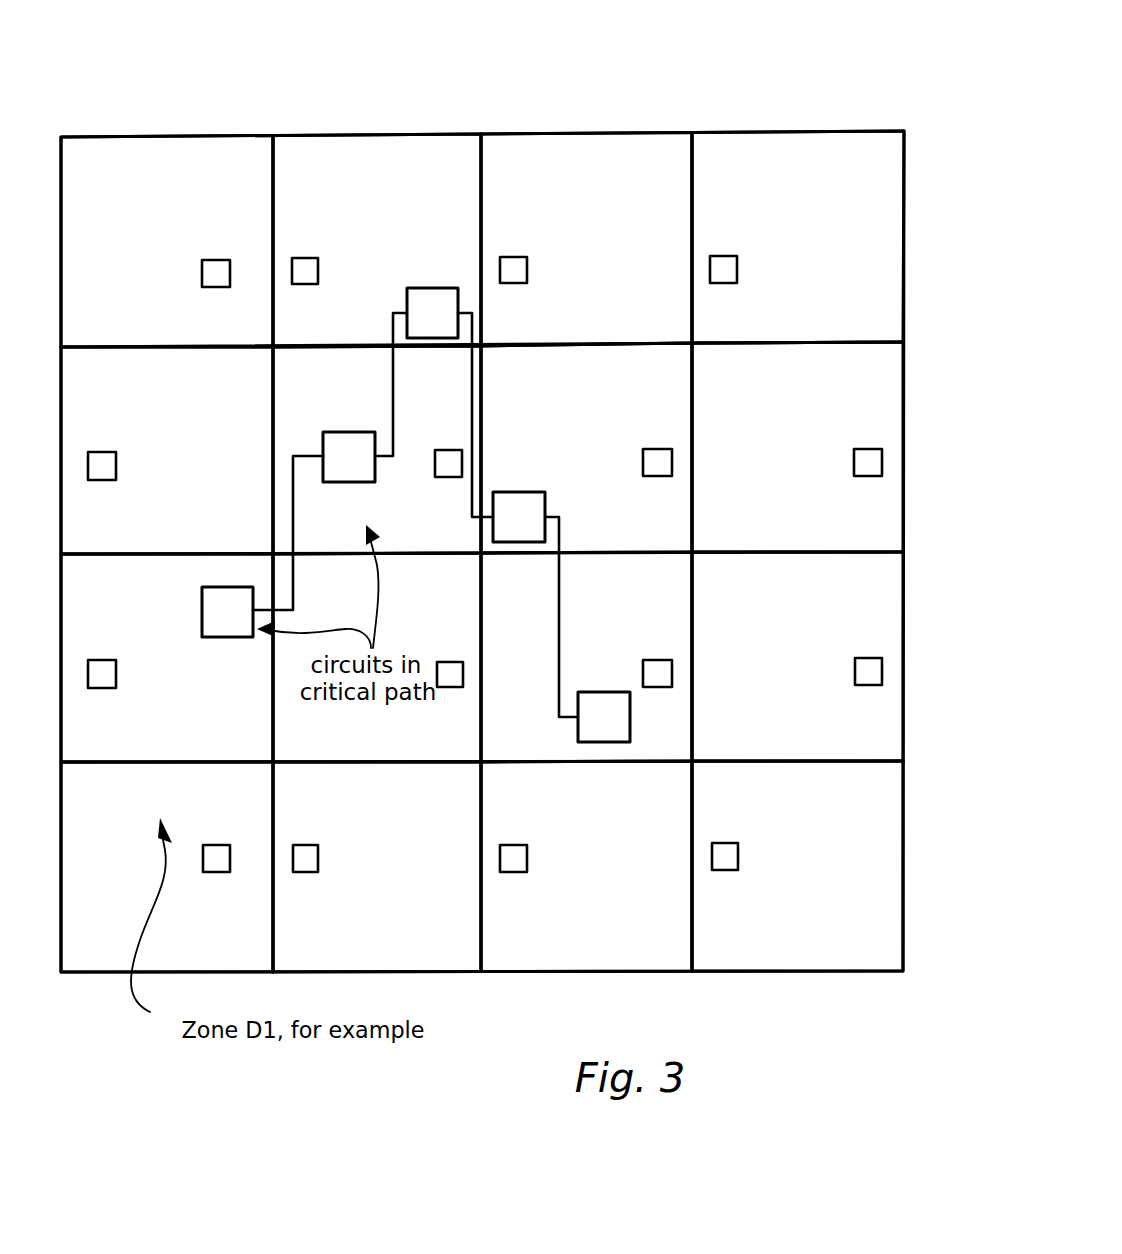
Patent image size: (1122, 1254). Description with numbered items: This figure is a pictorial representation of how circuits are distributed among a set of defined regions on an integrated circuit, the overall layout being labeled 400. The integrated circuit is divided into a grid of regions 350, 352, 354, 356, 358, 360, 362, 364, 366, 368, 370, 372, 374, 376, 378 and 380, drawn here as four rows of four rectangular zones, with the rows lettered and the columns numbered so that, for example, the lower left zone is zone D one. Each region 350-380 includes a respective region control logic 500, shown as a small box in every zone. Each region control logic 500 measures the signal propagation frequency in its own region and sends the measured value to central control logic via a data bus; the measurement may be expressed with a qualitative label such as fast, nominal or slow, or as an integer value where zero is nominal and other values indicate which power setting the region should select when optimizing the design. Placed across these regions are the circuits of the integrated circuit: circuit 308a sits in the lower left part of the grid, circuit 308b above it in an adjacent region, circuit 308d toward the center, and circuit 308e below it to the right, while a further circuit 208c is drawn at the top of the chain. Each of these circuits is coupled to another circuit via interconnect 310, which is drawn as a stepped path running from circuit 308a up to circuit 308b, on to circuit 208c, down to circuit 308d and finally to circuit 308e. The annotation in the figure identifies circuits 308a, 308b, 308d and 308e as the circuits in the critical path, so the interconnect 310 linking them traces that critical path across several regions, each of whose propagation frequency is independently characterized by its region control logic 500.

The programmable logic device layout grid 400 is at (747, 32).
The region 350 is at (142, 174).
The region 352 is at (351, 174).
The region 354 is at (560, 171).
The region 356 is at (770, 169).
The region 358 is at (142, 382).
The region 360 is at (322, 380).
The region 362 is at (560, 380).
The region 364 is at (774, 378).
The region 366 is at (137, 591).
The region 368 is at (405, 591).
The region 370 is at (573, 589).
The region 372 is at (770, 589).
The region 374 is at (142, 799).
The region 376 is at (352, 799).
The region 378 is at (562, 799).
The region 380 is at (775, 797).
The circuit c 208c is at (463, 279).
The circuit 308a is at (258, 670).
The circuit 308b is at (380, 517).
The circuit 308d is at (620, 500).
The circuit 308e is at (635, 682).
The interconnect 310 is at (393, 423).
The region control logic 500 is at (724, 896).